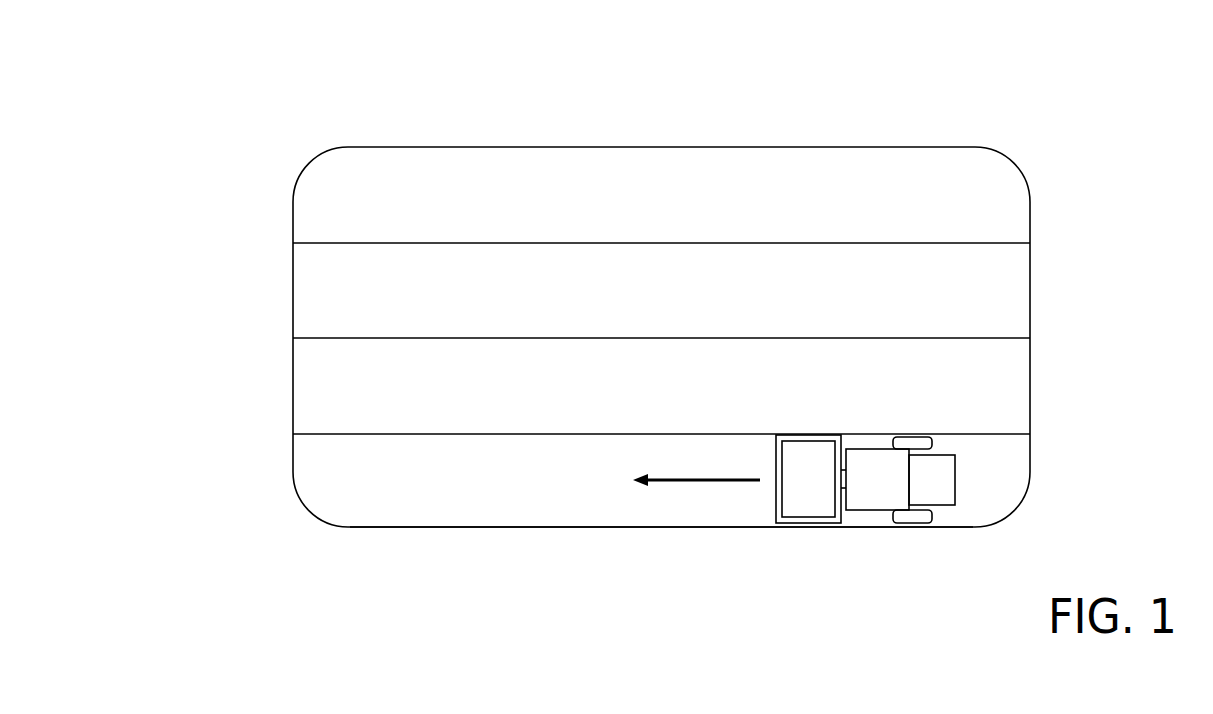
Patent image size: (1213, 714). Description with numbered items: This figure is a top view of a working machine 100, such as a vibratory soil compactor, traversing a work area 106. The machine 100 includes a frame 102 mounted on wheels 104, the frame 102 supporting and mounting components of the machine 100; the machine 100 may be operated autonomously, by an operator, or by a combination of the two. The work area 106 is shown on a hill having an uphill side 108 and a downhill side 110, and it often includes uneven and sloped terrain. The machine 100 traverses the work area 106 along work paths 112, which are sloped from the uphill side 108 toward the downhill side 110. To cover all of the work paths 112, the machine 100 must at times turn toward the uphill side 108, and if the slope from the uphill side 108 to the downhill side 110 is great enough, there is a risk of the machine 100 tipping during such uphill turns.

The working machine 100 is at (897, 492).
The frame 102 is at (940, 475).
The wheels 104 is at (915, 437).
The work area 106 is at (1002, 182).
The uphill side 108 is at (633, 114).
The downhill side 110 is at (622, 578).
The work paths 112 is at (315, 488).